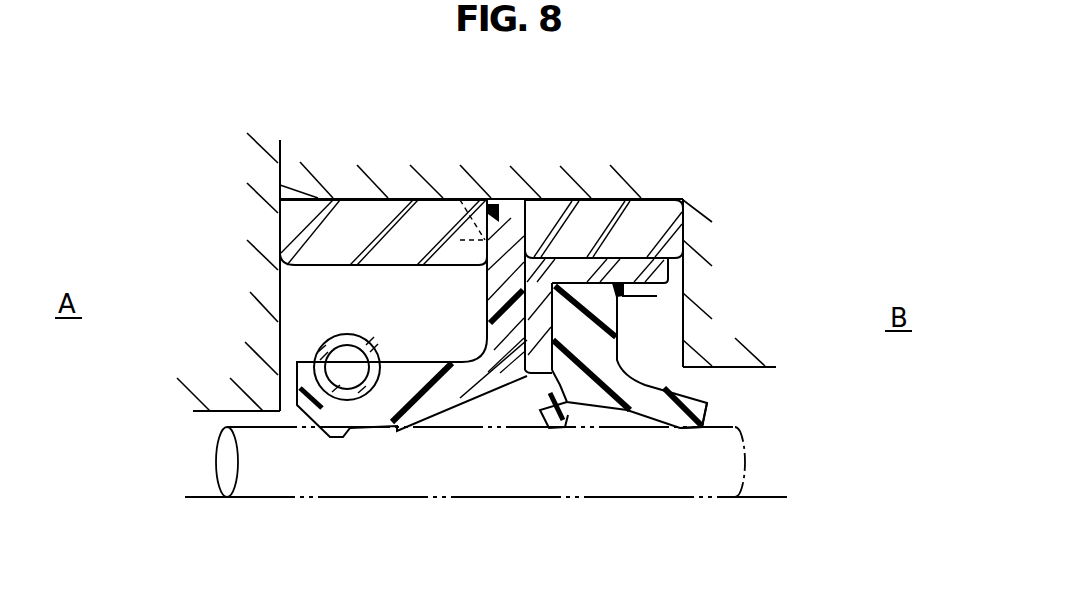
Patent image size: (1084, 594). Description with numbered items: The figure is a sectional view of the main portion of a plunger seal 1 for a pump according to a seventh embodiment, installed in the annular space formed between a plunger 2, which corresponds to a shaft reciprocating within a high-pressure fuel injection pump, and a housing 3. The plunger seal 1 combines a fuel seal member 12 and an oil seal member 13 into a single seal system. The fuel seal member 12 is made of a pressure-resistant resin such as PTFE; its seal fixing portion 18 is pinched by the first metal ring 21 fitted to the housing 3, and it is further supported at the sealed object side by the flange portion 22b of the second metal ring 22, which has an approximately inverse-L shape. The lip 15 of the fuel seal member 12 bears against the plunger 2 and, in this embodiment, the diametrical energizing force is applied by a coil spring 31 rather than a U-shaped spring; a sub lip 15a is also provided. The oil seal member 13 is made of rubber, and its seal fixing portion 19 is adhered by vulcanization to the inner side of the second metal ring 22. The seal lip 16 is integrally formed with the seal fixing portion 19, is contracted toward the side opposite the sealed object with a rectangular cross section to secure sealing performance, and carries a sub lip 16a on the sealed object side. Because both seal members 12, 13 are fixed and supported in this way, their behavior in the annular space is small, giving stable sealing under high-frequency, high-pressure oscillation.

The plunger seal 1 is at (322, 270).
The plunger 2 is at (501, 467).
The housing 3 is at (500, 197).
The fuel seal member 12 is at (483, 294).
The oil seal member 13 is at (650, 296).
The lip 15 is at (336, 440).
The sub lip 15a is at (413, 429).
The seal lip 16 is at (700, 428).
The sub lip 16a is at (572, 399).
The seal fixing portion 18 is at (510, 233).
The seal fixing portion 19 is at (593, 311).
The first metal ring 21 is at (628, 242).
The second metal ring 22 is at (645, 225).
The flange portion 22b is at (537, 262).
The coil spring 31 is at (373, 405).